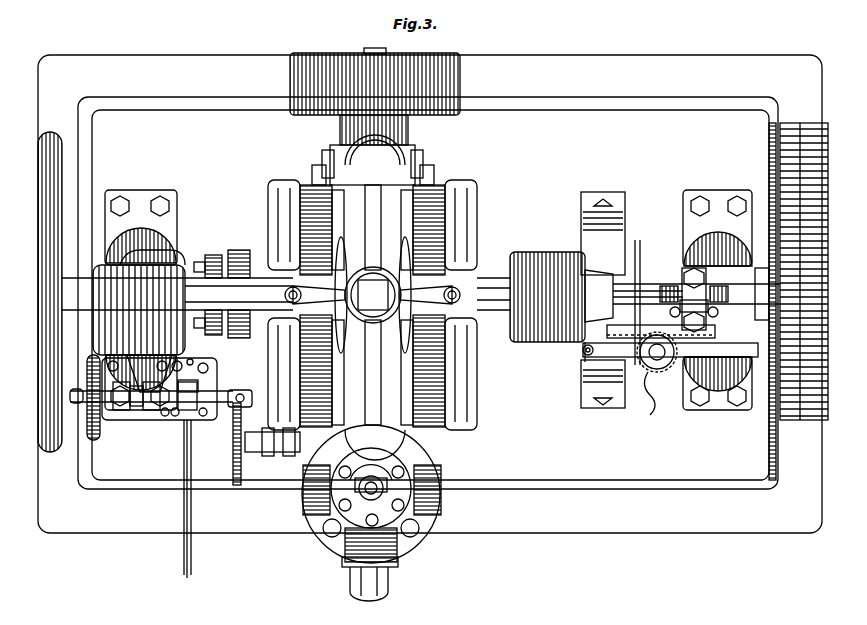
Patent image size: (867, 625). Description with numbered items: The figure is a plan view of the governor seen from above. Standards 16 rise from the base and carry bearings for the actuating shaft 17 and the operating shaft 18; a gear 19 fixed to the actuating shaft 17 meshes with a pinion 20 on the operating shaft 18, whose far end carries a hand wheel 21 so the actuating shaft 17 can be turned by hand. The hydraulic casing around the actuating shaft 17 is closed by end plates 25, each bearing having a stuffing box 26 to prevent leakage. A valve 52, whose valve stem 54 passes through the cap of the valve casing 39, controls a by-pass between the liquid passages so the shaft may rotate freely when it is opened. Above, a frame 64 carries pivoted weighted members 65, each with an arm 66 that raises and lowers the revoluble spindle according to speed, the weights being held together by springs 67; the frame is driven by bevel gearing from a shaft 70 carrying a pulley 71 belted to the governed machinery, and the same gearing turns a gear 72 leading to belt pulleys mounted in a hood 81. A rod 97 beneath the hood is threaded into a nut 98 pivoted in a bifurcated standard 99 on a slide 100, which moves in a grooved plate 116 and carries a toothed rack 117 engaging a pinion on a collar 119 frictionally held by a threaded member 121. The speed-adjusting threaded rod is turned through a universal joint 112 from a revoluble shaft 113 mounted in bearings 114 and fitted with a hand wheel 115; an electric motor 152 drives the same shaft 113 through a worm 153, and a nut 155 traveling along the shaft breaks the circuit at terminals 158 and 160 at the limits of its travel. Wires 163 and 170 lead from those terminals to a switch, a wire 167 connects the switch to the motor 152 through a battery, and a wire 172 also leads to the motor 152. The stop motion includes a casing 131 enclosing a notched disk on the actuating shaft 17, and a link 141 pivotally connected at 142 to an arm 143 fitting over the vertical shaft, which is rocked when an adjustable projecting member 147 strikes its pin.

The standards 16 is at (141, 190).
The actuating shaft 17 is at (388, 584).
The operating shaft 18 is at (248, 290).
The gear 19 is at (792, 135).
The pinion 20 is at (766, 200).
The hand wheel 21 is at (50, 134).
The end plates 25 is at (478, 240).
The stuffing box 26 is at (213, 258).
The valve casing 39 is at (440, 505).
The valve 52 is at (420, 482).
The valve stem 54 is at (366, 498).
The frame 64 is at (452, 190).
The weighted members 65 is at (365, 143).
The arm 66 is at (304, 198).
The springs 67 is at (300, 210).
The shaft 70 is at (400, 126).
The pulley 71 is at (316, 70).
The gear 72 is at (480, 330).
The hood 81 is at (545, 253).
The rod 97 is at (642, 292).
The nut 98 is at (712, 316).
The bifurcated standard 99 is at (694, 270).
The slide 100 is at (636, 275).
The universal joint 112 is at (258, 432).
The revoluble shaft 113 is at (214, 380).
The bearings 114 is at (160, 412).
The hand wheel 115 is at (90, 436).
The grooved plate 116 is at (602, 410).
The toothed rack 117 is at (630, 330).
The collar 119 is at (652, 372).
The member 121 is at (660, 358).
The casing 131 is at (616, 215).
The link 141 is at (582, 348).
The pivotal connection 142 is at (585, 356).
The arm 143 is at (598, 372).
The projecting member 147 is at (660, 395).
The electric motor 152 is at (170, 262).
The worm 153 is at (126, 412).
The nut 155 is at (192, 378).
The terminal 158 is at (165, 416).
The terminal 160 is at (203, 416).
The wire 163 is at (193, 552).
The wire 167 is at (187, 578).
The wire 170 is at (183, 550).
The wire 172 is at (192, 360).